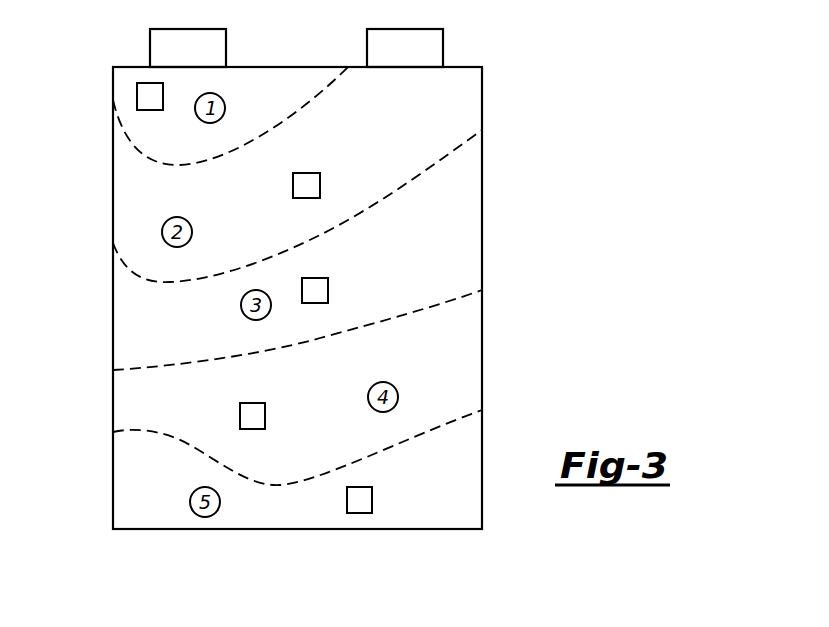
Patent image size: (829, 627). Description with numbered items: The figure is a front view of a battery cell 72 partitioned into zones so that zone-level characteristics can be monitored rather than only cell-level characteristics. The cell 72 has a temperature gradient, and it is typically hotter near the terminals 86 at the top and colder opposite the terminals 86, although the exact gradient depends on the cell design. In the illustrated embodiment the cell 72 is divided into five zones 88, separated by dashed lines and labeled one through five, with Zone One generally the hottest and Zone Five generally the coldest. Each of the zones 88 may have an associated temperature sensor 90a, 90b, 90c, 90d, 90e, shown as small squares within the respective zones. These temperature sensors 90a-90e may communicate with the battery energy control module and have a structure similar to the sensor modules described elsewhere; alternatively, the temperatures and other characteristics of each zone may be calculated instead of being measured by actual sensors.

The battery cell 72 is at (482, 225).
The terminal 86 is at (443, 45).
The zone 88 is at (268, 88).
The temperature sensor 90a is at (137, 97).
The temperature sensor 90b is at (293, 185).
The temperature sensor 90c is at (328, 292).
The temperature sensor 90d is at (265, 415).
The temperature sensor 90e is at (372, 500).